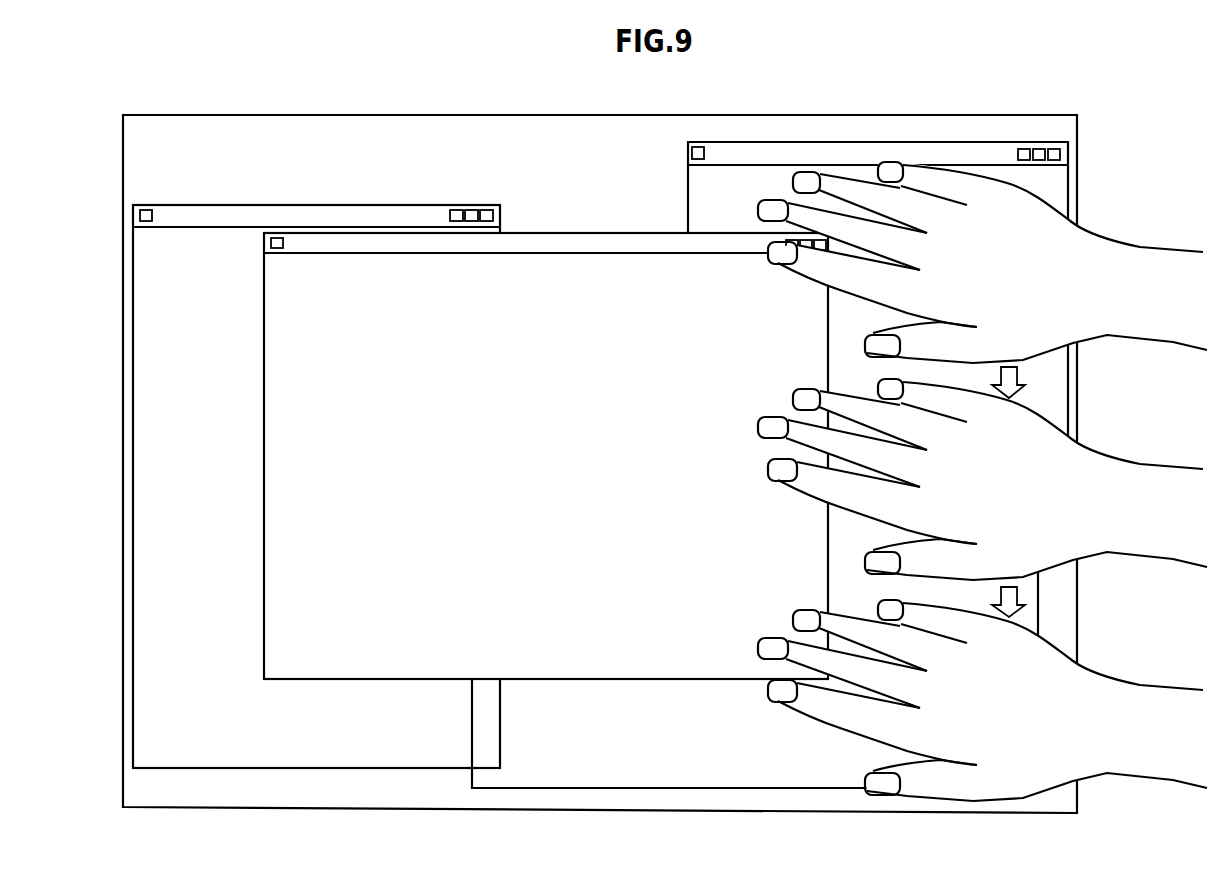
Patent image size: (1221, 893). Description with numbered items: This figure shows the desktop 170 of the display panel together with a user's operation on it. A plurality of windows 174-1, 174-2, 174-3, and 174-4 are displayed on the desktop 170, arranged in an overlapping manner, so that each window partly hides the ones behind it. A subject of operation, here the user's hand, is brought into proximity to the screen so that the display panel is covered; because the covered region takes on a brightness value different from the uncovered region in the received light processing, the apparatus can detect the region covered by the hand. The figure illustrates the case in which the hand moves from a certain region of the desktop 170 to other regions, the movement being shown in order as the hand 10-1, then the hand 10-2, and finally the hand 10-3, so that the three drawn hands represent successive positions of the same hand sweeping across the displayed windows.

The desktop 170 is at (511, 114).
The window 174-1 is at (585, 231).
The window 174-2 is at (315, 203).
The window 174-3 is at (878, 140).
The window 174-4 is at (664, 790).
The hand 10-1 is at (1143, 243).
The hand 10-2 is at (1143, 460).
The hand 10-3 is at (1143, 680).